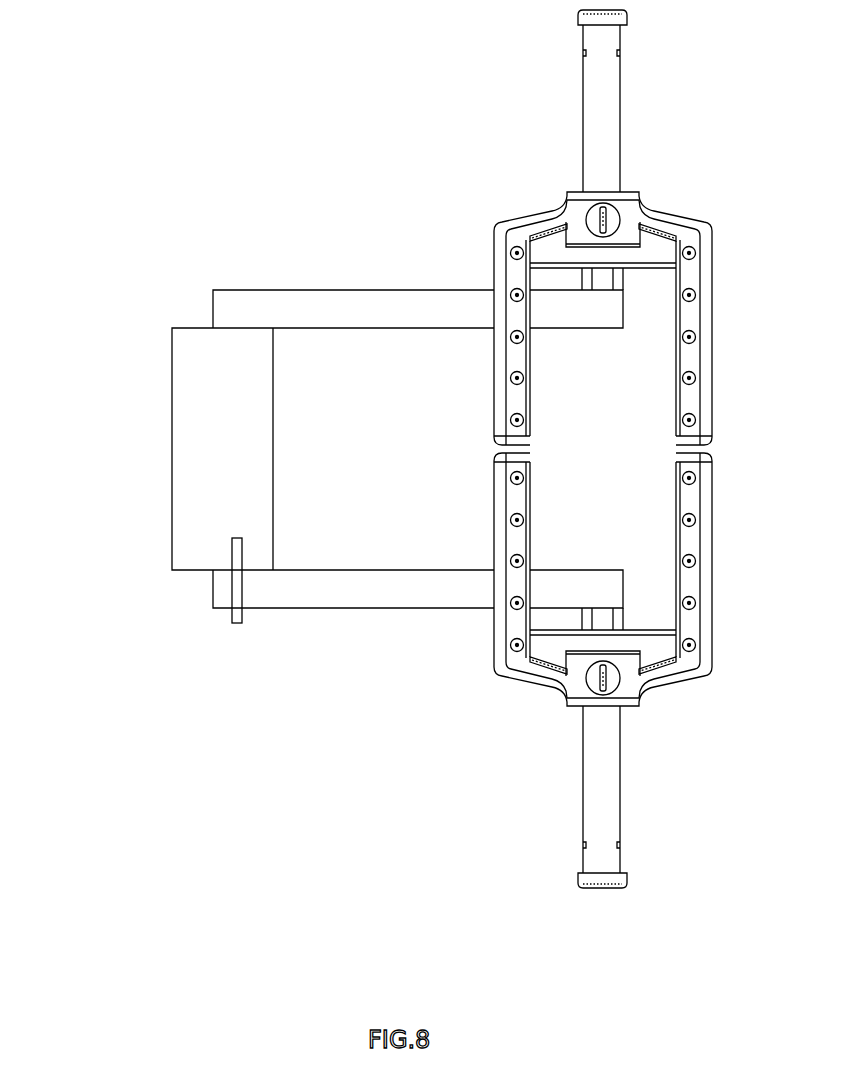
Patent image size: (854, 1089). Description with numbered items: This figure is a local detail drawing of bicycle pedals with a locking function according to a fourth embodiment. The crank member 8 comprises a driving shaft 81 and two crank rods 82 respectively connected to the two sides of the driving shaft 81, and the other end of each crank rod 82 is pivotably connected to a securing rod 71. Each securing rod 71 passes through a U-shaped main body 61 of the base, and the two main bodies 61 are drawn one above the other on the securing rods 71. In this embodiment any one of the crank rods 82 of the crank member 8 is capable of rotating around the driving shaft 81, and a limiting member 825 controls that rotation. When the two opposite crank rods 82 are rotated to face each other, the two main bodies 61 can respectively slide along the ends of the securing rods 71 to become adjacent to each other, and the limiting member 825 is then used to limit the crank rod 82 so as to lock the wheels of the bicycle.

The crank member 8 is at (199, 240).
The securing rod 71 is at (608, 110).
The main body 61 is at (705, 253).
The crank rod 82 is at (288, 307).
The driving shaft 81 is at (202, 487).
The limiting member 825 is at (239, 622).